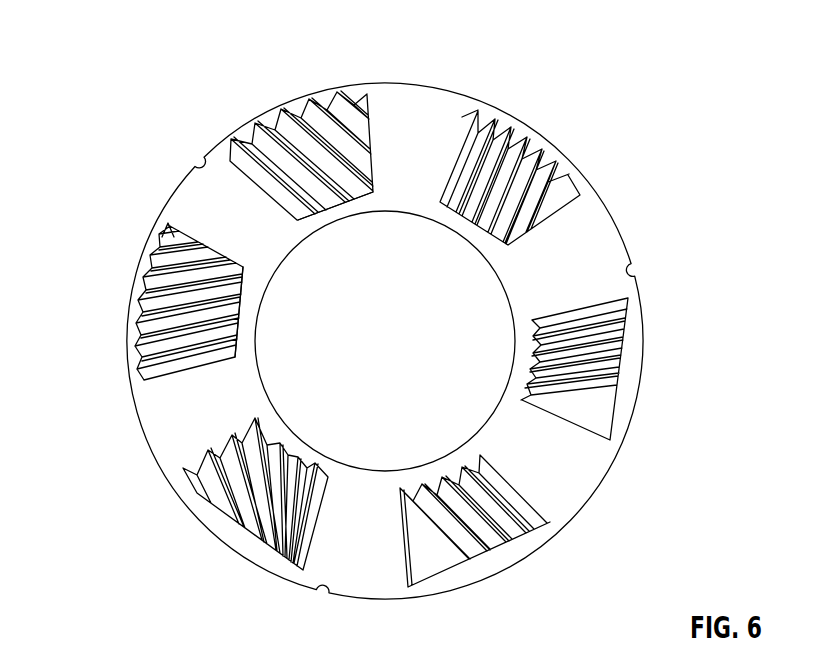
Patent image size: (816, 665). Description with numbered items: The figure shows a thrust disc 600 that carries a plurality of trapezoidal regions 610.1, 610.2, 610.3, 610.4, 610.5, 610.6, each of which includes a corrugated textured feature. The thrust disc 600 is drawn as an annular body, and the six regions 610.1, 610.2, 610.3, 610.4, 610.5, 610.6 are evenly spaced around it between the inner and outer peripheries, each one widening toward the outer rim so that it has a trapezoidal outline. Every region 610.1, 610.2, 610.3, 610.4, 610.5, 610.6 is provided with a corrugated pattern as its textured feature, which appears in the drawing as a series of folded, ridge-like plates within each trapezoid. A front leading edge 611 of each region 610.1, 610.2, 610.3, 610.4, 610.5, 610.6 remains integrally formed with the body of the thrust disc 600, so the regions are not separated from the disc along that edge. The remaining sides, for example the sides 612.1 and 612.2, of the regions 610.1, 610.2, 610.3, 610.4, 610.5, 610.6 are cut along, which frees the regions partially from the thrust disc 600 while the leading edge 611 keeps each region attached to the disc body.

The thrust disc 600 is at (106, 38).
The front leading edge 611 is at (130, 382).
The trapezoidal region 610.1 is at (128, 311).
The trapezoidal region 610.2 is at (274, 106).
The trapezoidal region 610.3 is at (538, 134).
The trapezoidal region 610.4 is at (644, 342).
The trapezoidal region 610.5 is at (485, 580).
The trapezoidal region 610.6 is at (221, 532).
The remaining side 612.1 is at (249, 306).
The remaining side 612.2 is at (341, 204).